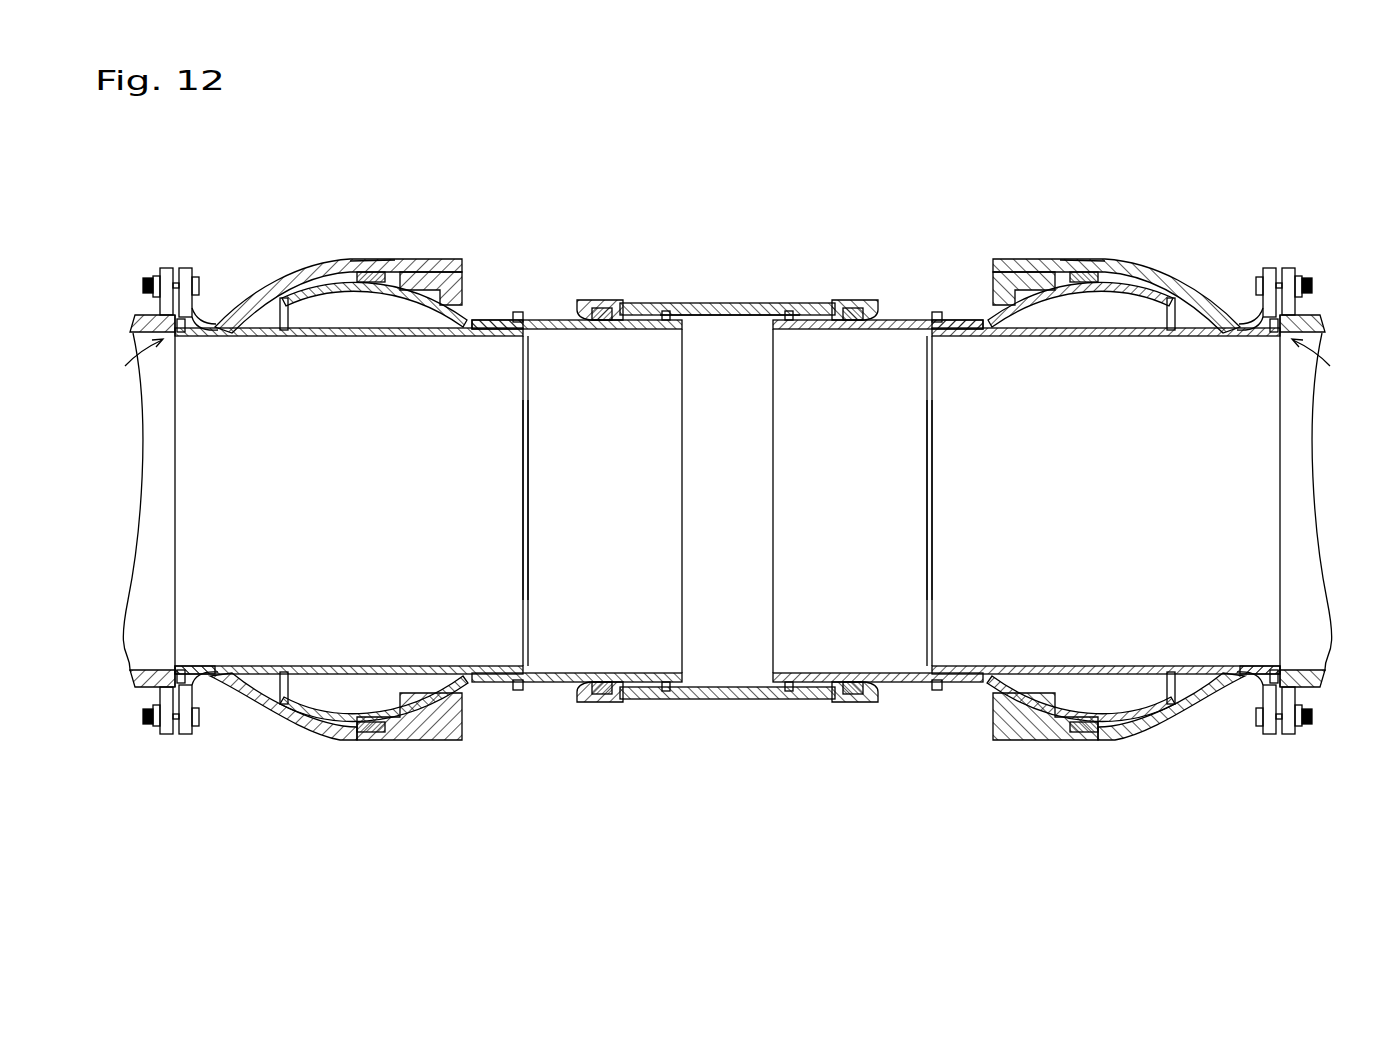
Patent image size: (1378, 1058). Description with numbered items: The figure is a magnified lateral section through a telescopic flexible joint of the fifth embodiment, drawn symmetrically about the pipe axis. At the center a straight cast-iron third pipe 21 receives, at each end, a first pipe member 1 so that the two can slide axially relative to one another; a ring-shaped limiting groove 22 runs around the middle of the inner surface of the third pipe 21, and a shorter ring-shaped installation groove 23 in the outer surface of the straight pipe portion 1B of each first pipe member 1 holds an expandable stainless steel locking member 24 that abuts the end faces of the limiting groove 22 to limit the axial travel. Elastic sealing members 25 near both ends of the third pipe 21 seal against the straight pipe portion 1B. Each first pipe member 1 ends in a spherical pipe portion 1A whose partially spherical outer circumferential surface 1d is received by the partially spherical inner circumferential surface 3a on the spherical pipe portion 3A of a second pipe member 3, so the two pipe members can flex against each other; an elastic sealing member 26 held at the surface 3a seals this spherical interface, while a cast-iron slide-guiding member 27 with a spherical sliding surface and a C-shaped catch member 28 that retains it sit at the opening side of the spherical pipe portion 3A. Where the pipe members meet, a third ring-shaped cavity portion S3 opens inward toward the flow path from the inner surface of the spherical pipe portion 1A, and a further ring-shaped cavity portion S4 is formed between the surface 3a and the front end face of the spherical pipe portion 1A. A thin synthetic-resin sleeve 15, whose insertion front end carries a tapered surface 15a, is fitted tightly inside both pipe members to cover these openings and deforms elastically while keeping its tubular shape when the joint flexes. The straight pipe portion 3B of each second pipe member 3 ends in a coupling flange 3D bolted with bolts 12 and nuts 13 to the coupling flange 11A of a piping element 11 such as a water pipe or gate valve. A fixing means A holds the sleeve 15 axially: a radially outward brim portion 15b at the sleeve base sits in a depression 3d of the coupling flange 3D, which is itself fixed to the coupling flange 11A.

The first pipe member 1 is at (521, 316).
The spherical pipe portion 1A is at (390, 292).
The straight pipe portion 1B is at (583, 330).
The partially spherical outer circumferential surface 1d is at (365, 262).
The second pipe member 3 is at (290, 278).
The spherical pipe portion 3A is at (415, 260).
The straight pipe portion 3B is at (214, 324).
The coupling flange 3D is at (186, 268).
The partially spherical inner circumferential surface 3a is at (278, 338).
The depression 3d is at (183, 333).
The piping element 11 is at (137, 315).
The coupling flange 11A is at (166, 268).
The bolt 12 is at (200, 722).
The nut 13 is at (148, 726).
The sleeve 15 is at (470, 330).
The tapered surface 15a is at (522, 500).
The brim portion 15b is at (174, 668).
The third pipe 21 is at (722, 303).
The limiting groove 22 is at (712, 316).
The installation groove 23 is at (666, 322).
The locking member 24 is at (604, 308).
The elastic sealing member 25 is at (586, 300).
The elastic sealing member 26 is at (365, 272).
The slide-guiding member 27 is at (410, 720).
The catch member 28 is at (462, 718).
The fixing means A is at (728, 362).
The third ring-shaped cavity portion S3 is at (343, 690).
The ring-shaped cavity portion S4 is at (265, 690).